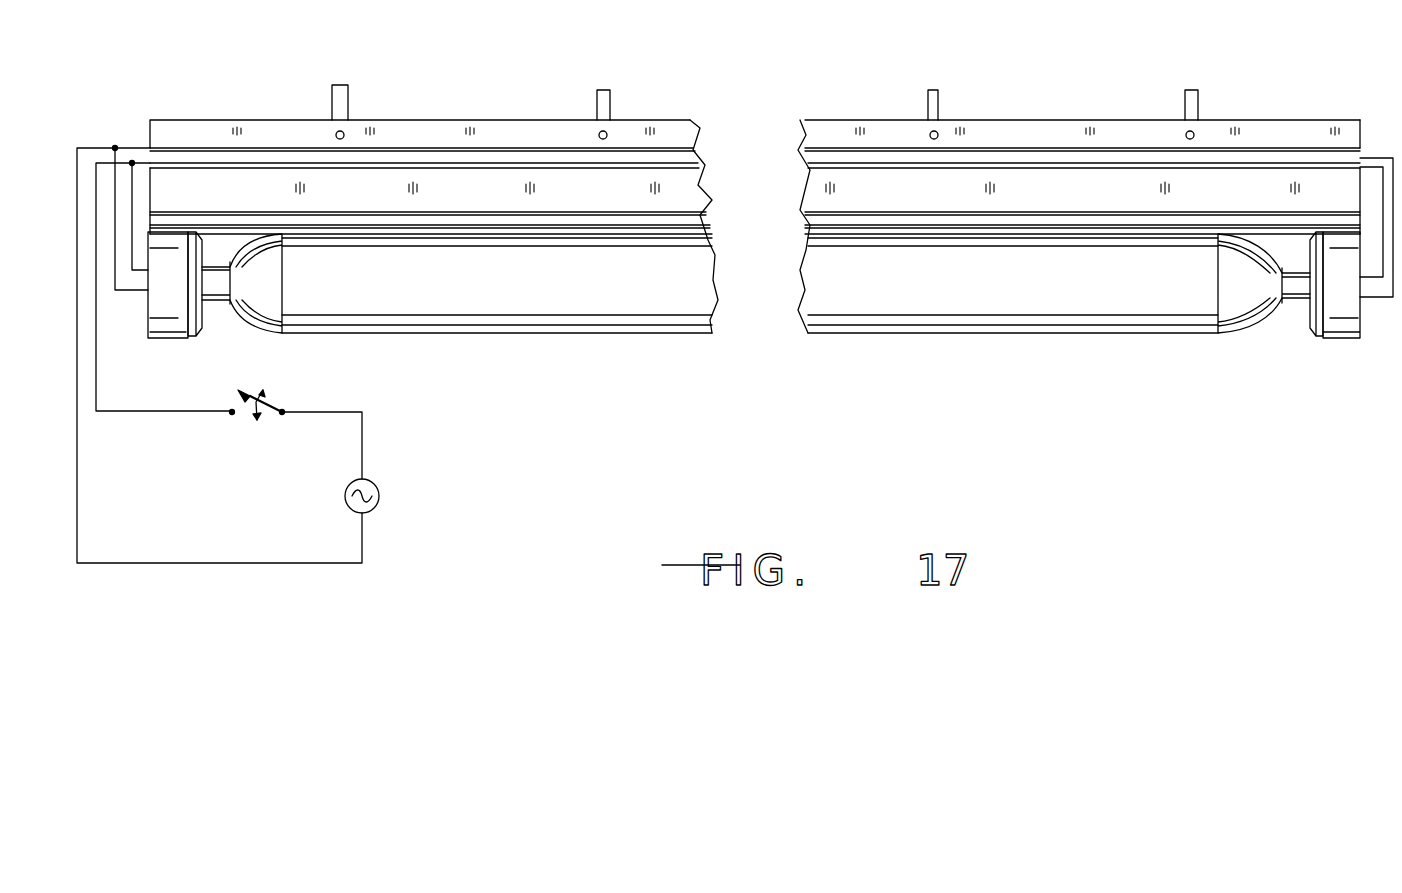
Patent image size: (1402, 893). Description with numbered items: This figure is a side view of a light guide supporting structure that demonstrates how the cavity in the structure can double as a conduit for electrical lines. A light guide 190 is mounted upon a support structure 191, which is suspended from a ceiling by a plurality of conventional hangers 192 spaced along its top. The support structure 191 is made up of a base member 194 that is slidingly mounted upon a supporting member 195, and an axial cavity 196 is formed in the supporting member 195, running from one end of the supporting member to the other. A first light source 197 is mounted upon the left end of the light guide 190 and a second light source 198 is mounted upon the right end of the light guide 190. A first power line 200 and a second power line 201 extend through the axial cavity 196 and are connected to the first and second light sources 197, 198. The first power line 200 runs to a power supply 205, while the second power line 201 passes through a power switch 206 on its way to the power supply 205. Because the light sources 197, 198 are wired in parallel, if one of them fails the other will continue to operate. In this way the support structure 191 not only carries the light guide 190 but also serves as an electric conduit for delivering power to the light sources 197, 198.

The light guide 190 is at (571, 315).
The support structure 191 is at (697, 196).
The hangers 192 is at (341, 87).
The base member 194 is at (710, 226).
The supporting member 195 is at (686, 126).
The axial cavity 196 is at (697, 147).
The first light source 197 is at (263, 323).
The second light source 198 is at (1252, 336).
The first power line 200 is at (128, 147).
The second power line 201 is at (140, 166).
The power supply 205 is at (373, 484).
The power switch 206 is at (282, 392).